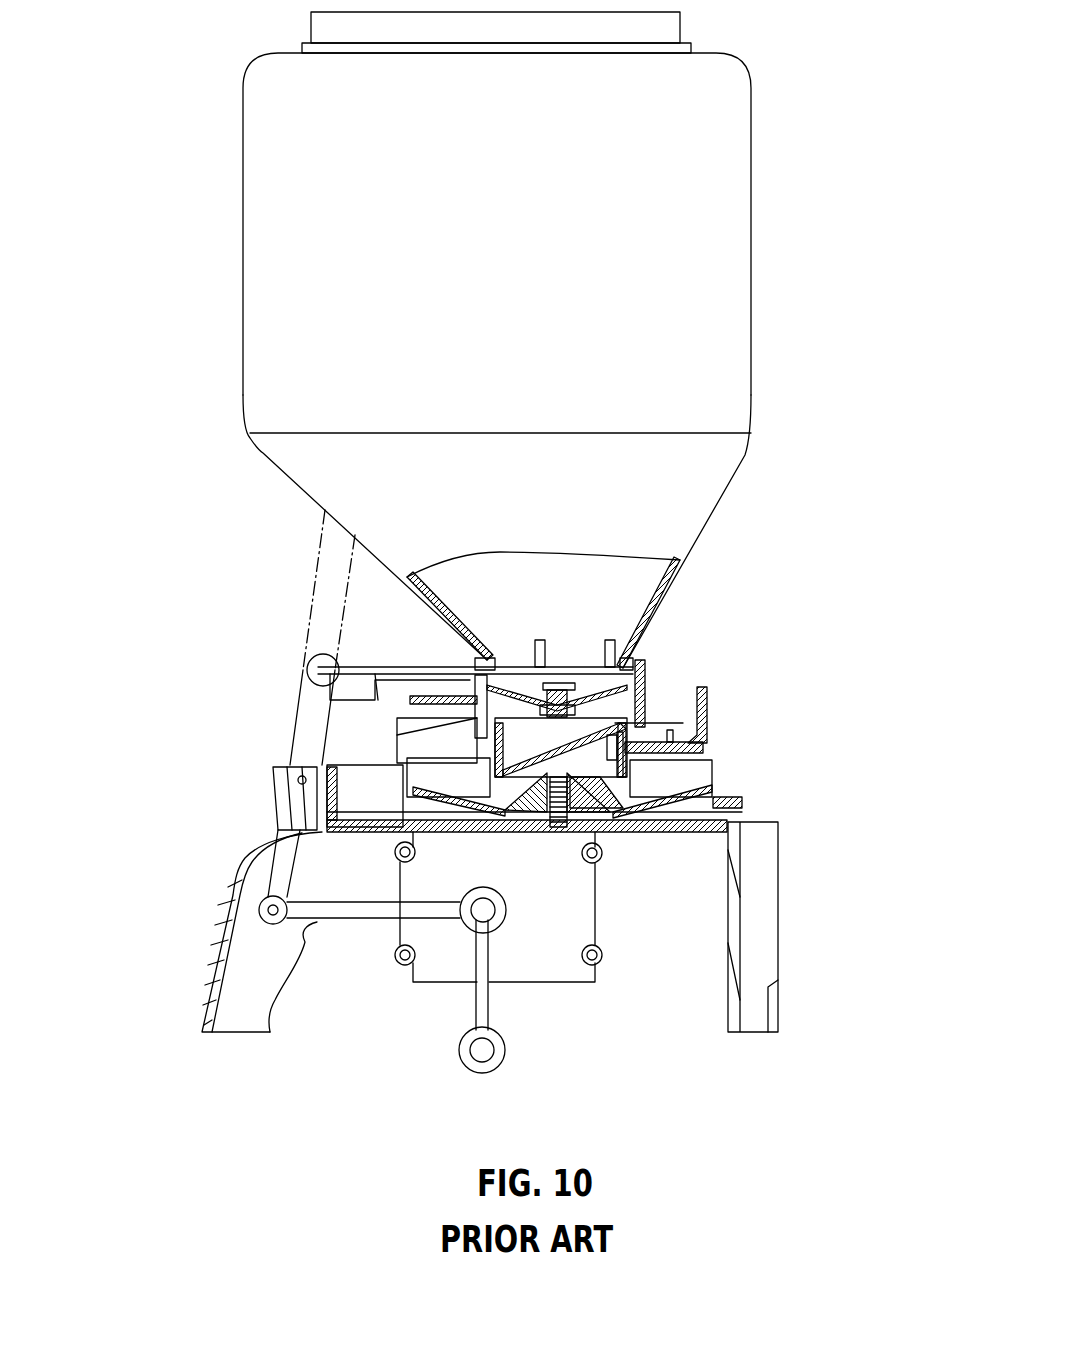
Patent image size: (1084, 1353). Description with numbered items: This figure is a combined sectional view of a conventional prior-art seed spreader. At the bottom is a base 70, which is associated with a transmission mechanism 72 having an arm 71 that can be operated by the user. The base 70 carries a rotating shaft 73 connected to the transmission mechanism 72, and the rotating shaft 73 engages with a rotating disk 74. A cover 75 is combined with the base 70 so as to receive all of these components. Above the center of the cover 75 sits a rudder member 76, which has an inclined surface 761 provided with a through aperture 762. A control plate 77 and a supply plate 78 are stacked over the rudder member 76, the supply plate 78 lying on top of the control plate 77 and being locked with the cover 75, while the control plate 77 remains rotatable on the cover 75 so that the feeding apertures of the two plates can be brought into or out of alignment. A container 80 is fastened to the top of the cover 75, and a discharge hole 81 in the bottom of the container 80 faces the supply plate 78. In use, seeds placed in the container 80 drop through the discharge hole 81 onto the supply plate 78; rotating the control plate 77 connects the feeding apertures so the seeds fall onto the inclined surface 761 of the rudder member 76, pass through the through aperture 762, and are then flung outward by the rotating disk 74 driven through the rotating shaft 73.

The base 70 is at (228, 868).
The arm 71 is at (468, 1049).
The transmission mechanism 72 is at (453, 950).
The rotating shaft 73 is at (567, 798).
The rotating disk 74 is at (735, 800).
The cover 75 is at (283, 765).
The rudder member 76 is at (705, 750).
The inclined surface 761 is at (477, 713).
The through aperture 762 is at (483, 745).
The control plate 77 is at (630, 690).
The supply plate 78 is at (625, 672).
The container 80 is at (713, 475).
The discharge hole 81 is at (483, 647).